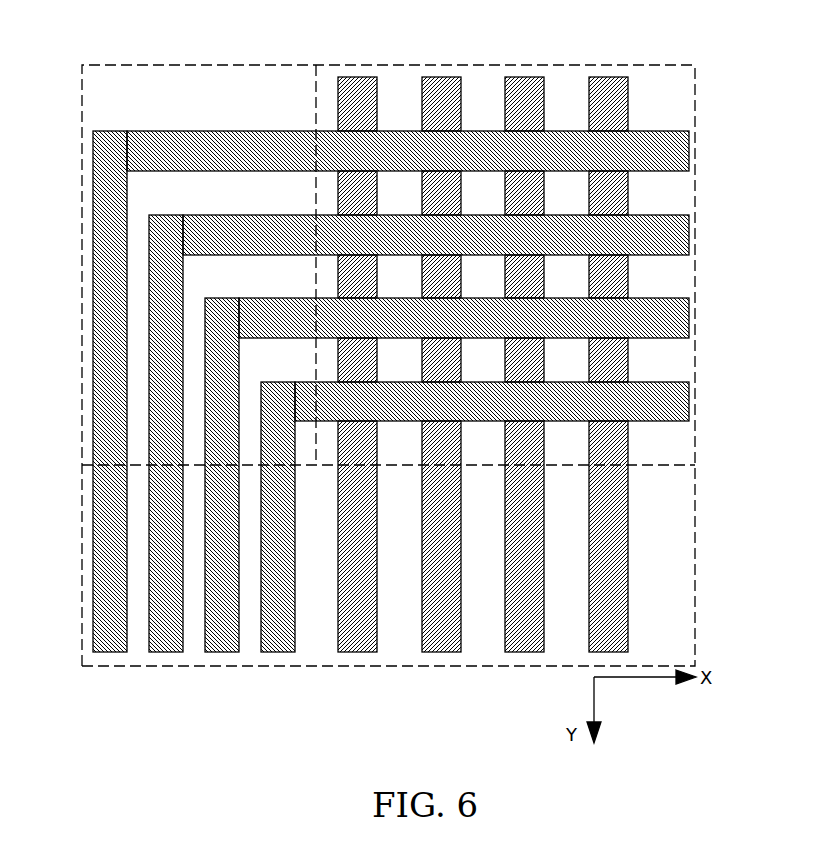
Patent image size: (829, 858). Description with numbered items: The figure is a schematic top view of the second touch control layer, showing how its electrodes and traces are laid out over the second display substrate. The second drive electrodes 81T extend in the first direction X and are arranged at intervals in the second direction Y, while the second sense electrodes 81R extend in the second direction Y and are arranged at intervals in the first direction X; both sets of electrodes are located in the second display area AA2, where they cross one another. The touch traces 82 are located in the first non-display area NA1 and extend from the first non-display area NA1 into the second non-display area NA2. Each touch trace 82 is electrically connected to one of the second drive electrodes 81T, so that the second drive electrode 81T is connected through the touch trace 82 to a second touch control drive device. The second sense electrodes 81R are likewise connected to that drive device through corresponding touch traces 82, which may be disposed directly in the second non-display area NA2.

The touch trace 82 is at (115, 322).
The second drive electrode 81T is at (657, 146).
The second sense electrode 81R is at (603, 97).
The first non-display area NA1 is at (227, 103).
The second non-display area NA2 is at (660, 606).
The second display area AA2 is at (659, 94).